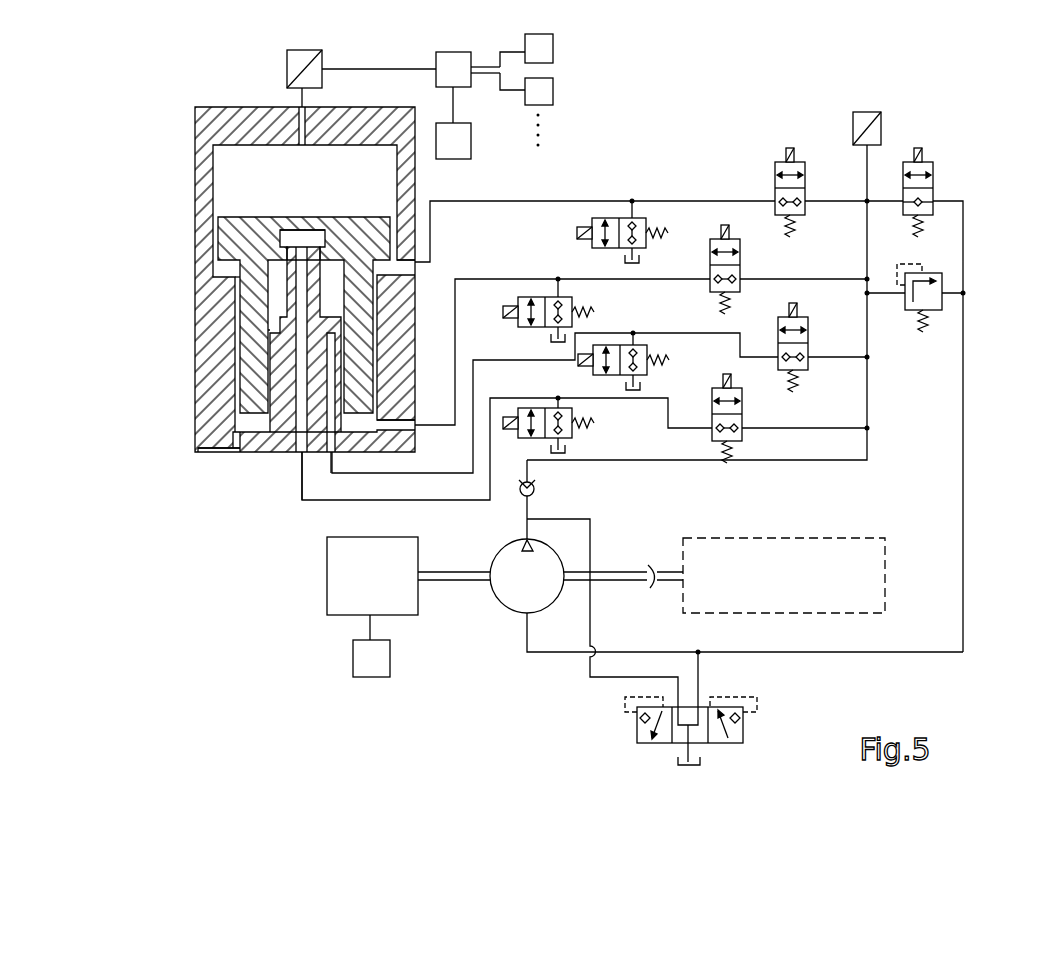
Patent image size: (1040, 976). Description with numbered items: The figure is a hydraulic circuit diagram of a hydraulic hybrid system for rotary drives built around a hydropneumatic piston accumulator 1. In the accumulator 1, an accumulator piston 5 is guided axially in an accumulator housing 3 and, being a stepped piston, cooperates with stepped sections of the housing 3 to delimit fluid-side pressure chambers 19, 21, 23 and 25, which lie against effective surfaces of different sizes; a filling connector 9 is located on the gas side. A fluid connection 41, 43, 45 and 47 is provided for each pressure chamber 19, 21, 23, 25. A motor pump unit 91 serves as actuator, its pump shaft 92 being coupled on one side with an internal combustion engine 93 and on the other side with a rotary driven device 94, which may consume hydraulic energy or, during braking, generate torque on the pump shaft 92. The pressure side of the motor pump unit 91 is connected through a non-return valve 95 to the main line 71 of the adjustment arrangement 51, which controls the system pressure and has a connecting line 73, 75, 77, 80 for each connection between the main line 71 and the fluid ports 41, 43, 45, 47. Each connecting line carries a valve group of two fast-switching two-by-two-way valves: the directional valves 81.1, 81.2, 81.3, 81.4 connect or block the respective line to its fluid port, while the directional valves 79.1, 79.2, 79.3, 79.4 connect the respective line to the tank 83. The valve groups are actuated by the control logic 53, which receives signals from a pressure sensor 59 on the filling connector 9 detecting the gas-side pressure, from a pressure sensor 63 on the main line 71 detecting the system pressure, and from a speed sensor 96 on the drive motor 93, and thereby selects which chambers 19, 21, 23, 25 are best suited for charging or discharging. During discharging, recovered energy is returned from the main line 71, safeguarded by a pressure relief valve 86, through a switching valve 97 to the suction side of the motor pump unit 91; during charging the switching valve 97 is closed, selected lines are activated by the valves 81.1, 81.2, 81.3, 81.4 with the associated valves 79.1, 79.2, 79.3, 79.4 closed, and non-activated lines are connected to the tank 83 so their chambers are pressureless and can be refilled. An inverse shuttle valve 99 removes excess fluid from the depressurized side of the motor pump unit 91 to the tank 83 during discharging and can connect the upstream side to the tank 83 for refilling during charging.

The hydropneumatic piston accumulator 1 is at (165, 98).
The accumulator housing 3 is at (213, 437).
The accumulator piston 5 is at (240, 227).
The filling connector 9 is at (298, 106).
The pressure chamber 19 is at (227, 268).
The pressure chamber 21 is at (203, 450).
The pressure chamber 23 is at (273, 327).
The pressure chamber 25 is at (317, 237).
The fluid connection 41 is at (418, 262).
The fluid connection 43 is at (416, 428).
The fluid connection 45 is at (330, 455).
The fluid connection 47 is at (300, 455).
The adjustment arrangement 51 is at (670, 150).
The control logic 53 is at (452, 52).
The pressure sensor 59 is at (313, 47).
The pressure sensor 63 is at (881, 118).
The main line 71 is at (868, 388).
The connecting line 73 is at (495, 203).
The connecting line 75 is at (457, 325).
The connecting line 77 is at (475, 403).
The directional valve 79.1 is at (600, 218).
The directional valve 79.2 is at (528, 297).
The directional valve 79.3 is at (650, 349).
The directional valve 79.4 is at (573, 437).
The connecting line 80 is at (471, 502).
The directional valve 81.1 is at (775, 172).
The directional valve 81.2 is at (740, 252).
The directional valve 81.3 is at (808, 360).
The directional valve 81.4 is at (743, 432).
The tank 83 is at (636, 262).
The pressure relief valve 86 is at (945, 278).
The motor pump unit 91 is at (507, 605).
The pump shaft 92 is at (455, 582).
The internal combustion engine 93 is at (325, 592).
The rotary driven device 94 is at (840, 613).
The non-return valve 95 is at (524, 497).
The speed sensor 96 is at (471, 140).
The switching valve 97 is at (935, 195).
The inverse shuttle valve 99 is at (637, 730).